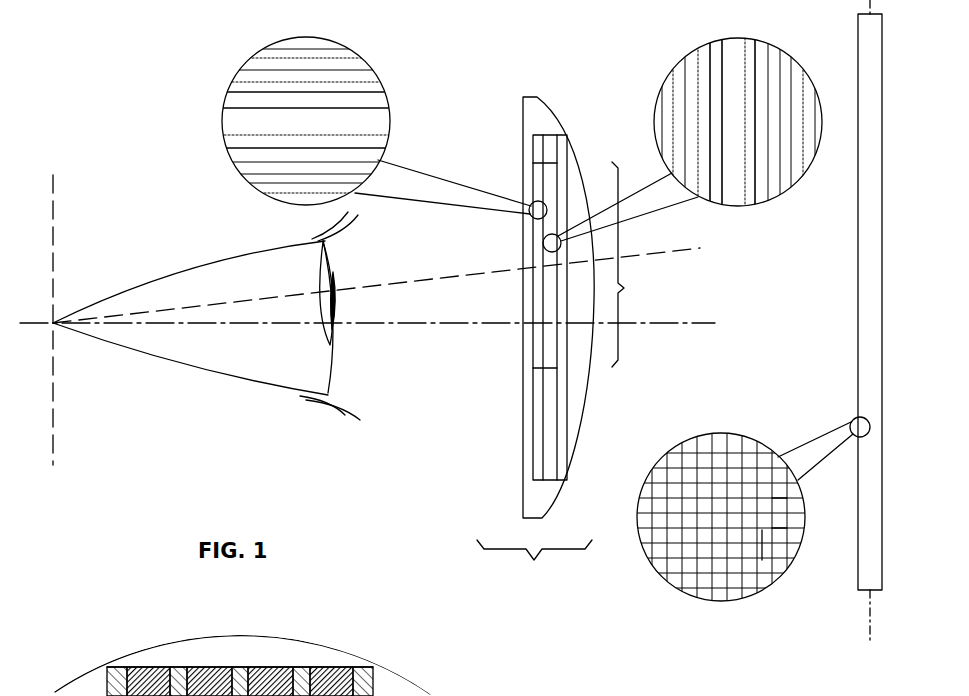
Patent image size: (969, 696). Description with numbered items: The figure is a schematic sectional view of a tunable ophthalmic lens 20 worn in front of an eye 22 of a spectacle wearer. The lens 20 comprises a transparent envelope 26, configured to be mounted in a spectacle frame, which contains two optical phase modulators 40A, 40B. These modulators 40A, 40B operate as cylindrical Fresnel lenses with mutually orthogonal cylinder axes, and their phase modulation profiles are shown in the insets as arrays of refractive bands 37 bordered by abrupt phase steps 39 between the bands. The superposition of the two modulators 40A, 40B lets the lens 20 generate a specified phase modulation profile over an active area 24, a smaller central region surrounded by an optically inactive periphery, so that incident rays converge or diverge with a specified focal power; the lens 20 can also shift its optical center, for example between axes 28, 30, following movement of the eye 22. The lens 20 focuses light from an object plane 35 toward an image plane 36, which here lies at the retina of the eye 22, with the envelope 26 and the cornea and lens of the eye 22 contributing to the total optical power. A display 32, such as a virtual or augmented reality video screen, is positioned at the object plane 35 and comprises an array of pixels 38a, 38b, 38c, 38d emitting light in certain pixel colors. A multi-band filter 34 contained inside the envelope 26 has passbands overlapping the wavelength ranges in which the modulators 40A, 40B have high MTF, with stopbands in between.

The tunable ophthalmic lens 20 is at (534, 565).
The eye 22 is at (200, 270).
The active area 24 is at (636, 264).
The transparent envelope 26 is at (535, 97).
The axis 28 is at (686, 244).
The axis 30 is at (712, 325).
The display 32 is at (858, 582).
The multi-band filter 34 is at (560, 428).
The object plane 35 is at (868, 615).
The image plane 36 is at (55, 430).
The refractive bands 37 is at (222, 143).
The pixel 38a is at (719, 454).
The pixel 38b is at (786, 502).
The pixel 38c is at (762, 530).
The pixel 38d is at (779, 531).
The abrupt phase steps 39 is at (362, 74).
The optical phase modulator 40A is at (548, 140).
The optical phase modulator 40B is at (538, 170).